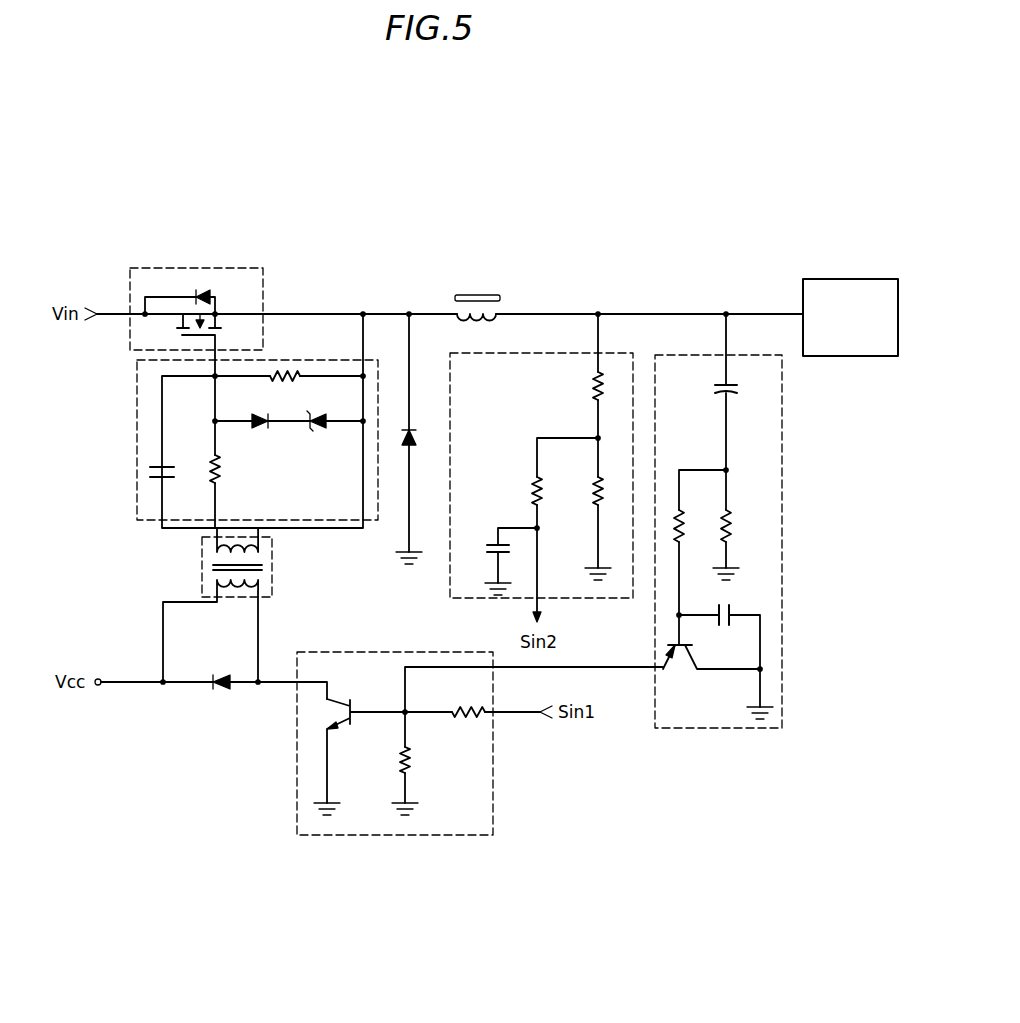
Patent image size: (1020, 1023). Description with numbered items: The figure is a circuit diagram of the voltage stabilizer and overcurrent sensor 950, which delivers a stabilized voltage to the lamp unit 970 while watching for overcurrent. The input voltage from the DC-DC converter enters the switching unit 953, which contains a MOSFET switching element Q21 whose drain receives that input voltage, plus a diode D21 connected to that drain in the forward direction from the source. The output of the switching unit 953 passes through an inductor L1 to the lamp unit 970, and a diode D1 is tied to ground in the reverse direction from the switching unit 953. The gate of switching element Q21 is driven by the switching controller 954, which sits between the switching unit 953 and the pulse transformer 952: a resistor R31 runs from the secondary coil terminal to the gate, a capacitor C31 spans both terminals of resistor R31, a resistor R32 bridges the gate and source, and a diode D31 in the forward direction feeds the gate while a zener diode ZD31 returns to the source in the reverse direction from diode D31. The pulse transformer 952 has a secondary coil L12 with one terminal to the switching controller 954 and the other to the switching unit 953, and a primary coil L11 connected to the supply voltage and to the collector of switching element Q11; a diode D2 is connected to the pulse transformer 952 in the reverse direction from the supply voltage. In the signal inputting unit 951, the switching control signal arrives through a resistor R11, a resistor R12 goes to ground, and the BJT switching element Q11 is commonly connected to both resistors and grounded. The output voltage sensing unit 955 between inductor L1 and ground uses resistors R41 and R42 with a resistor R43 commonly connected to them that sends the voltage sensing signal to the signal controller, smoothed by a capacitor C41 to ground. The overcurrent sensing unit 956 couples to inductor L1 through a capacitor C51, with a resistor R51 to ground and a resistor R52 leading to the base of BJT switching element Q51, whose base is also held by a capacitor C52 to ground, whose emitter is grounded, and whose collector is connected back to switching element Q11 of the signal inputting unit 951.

The voltage stabilizer and overcurrent sensor 950 is at (376, 246).
The signal inputting unit 951 is at (297, 776).
The pulse transformer 952 is at (202, 570).
The switching unit 953 is at (240, 268).
The switching controller 954 is at (137, 449).
The output voltage sensing unit 955 is at (600, 598).
The overcurrent sensing unit 956 is at (782, 520).
The lamp unit 970 is at (858, 279).
The diode D21 is at (181, 296).
The switching element Q21 is at (216, 345).
The inductor L1 is at (477, 298).
The diode D1 is at (419, 439).
The resistor R32 is at (284, 386).
The capacitor C31 is at (175, 462).
The resistor R31 is at (232, 469).
The diode D31 is at (262, 434).
The zener diode ZD31 is at (320, 432).
The secondary coil L12 is at (237, 540).
The primary coil L11 is at (210, 631).
The diode D2 is at (218, 694).
The switching element Q11 is at (376, 757).
The resistor R11 is at (468, 701).
The resistor R12 is at (417, 781).
The resistor R41 is at (582, 386).
The resistor R42 is at (583, 525).
The resistor R43 is at (517, 491).
The capacitor C41 is at (483, 567).
The capacitor C51 is at (743, 392).
The resistor R51 is at (741, 545).
The resistor R52 is at (695, 527).
The capacitor C52 is at (725, 628).
The switching element Q51 is at (718, 682).